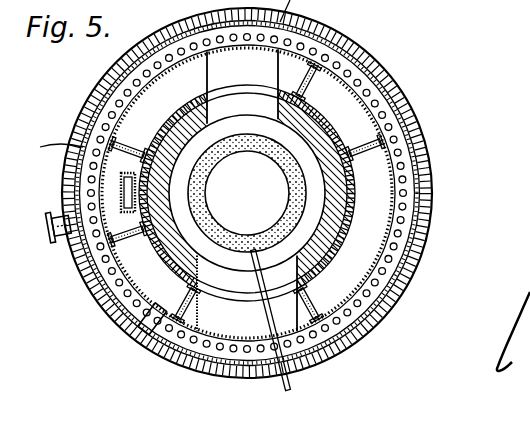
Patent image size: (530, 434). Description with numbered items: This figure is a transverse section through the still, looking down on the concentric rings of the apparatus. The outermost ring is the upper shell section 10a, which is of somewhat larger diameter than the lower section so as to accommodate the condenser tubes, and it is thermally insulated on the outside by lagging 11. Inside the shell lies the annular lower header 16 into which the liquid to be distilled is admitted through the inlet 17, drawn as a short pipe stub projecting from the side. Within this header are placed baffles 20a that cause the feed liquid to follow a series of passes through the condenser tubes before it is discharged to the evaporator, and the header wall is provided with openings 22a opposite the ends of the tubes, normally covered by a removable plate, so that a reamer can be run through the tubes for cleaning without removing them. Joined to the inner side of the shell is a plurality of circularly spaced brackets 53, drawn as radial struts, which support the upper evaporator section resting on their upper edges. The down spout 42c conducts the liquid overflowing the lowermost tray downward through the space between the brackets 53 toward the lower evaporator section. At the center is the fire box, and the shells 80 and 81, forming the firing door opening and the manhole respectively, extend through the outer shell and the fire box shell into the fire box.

The lagging 11 is at (97, 95).
The upper shell section 10a is at (88, 125).
The baffles 20a is at (80, 207).
The openings 22a is at (330, 49).
The lower header 16 is at (350, 82).
The inlet 17 is at (68, 242).
The brackets 53 is at (124, 146).
The down spout 42c is at (124, 173).
The manhole shell 81 is at (277, 59).
The firing door opening shell 80 is at (297, 322).